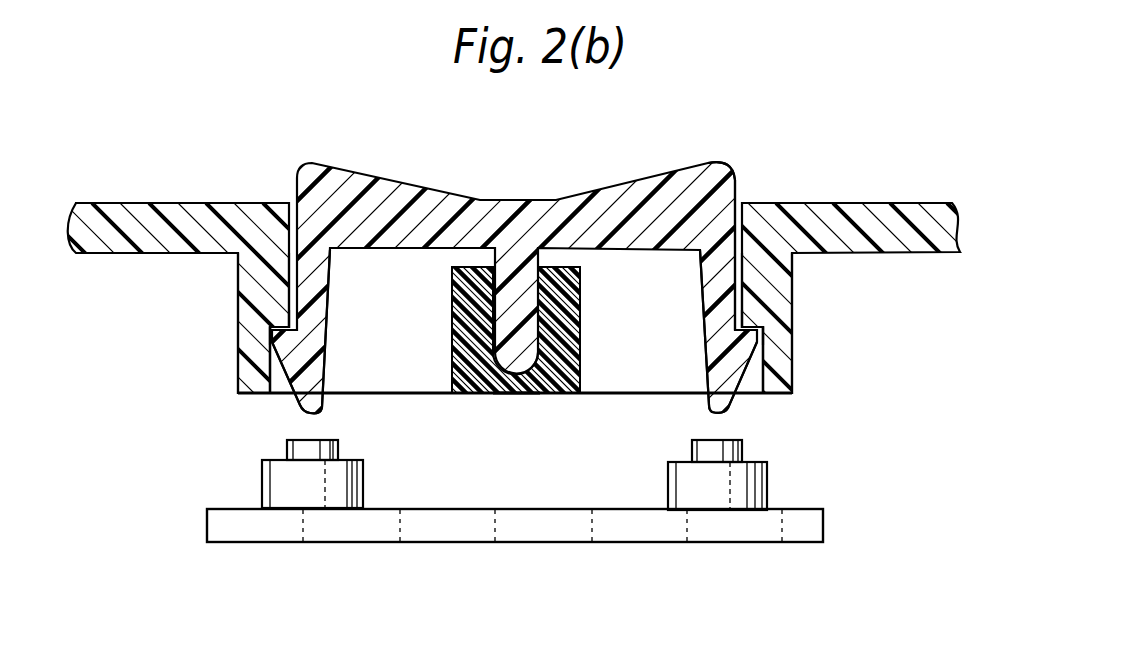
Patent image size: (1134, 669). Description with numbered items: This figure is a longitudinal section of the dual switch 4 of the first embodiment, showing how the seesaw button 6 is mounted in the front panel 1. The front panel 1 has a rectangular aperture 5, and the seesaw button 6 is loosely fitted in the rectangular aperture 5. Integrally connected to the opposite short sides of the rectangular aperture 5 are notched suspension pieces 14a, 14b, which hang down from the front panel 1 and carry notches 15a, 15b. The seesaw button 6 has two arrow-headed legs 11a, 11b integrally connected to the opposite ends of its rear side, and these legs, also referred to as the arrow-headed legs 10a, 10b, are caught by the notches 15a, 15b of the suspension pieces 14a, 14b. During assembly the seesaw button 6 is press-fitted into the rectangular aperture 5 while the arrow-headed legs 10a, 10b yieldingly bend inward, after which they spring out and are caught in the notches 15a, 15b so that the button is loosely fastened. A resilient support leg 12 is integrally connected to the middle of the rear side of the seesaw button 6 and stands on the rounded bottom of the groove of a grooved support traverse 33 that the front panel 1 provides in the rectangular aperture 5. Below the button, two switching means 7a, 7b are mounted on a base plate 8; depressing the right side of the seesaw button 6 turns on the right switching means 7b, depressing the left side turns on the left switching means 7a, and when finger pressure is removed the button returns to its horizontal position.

The front panel 1 is at (153, 215).
The dual switch 4 is at (742, 112).
The rectangular aperture 5 is at (605, 352).
The seesaw button 6 is at (430, 196).
The left switching means 7a is at (325, 450).
The right switching means 7b is at (705, 452).
The base plate 8 is at (626, 532).
The arrow-headed leg 10a is at (322, 300).
The arrow-headed leg 10b is at (712, 318).
The arrow-headed leg 11a is at (265, 371).
The arrow-headed leg 11b is at (757, 368).
The resilient support leg 12 is at (502, 330).
The notched suspension piece 14a is at (240, 288).
The notched suspension piece 14b is at (782, 284).
The notch 15a is at (262, 320).
The notch 15b is at (752, 315).
The grooved support traverse 33 is at (536, 395).